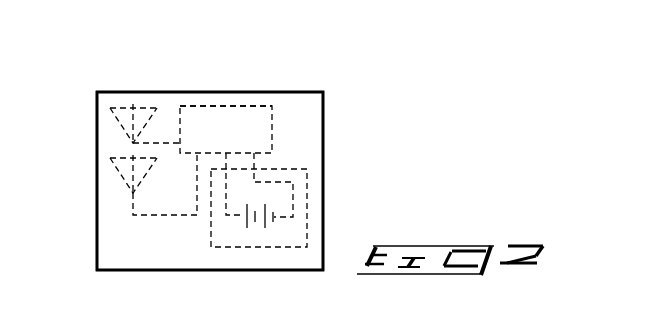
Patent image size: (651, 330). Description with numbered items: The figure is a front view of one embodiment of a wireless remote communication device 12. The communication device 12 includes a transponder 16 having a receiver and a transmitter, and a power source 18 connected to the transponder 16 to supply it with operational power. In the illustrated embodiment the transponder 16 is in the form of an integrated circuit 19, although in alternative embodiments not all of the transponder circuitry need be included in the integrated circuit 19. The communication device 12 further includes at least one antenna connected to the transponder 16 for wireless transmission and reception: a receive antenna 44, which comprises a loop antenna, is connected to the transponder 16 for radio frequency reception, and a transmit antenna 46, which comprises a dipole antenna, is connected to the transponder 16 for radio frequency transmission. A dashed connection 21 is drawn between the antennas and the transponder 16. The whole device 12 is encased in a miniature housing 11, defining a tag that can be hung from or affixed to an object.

The miniature housing 11 is at (97, 231).
The remote communication device 12 is at (323, 134).
The transponder 16 is at (210, 130).
The power source 18 is at (307, 205).
The integrated circuit 19 is at (245, 107).
The connection line 21 is at (150, 258).
The receive antenna 44 is at (138, 107).
The transmit antenna 46 is at (122, 175).